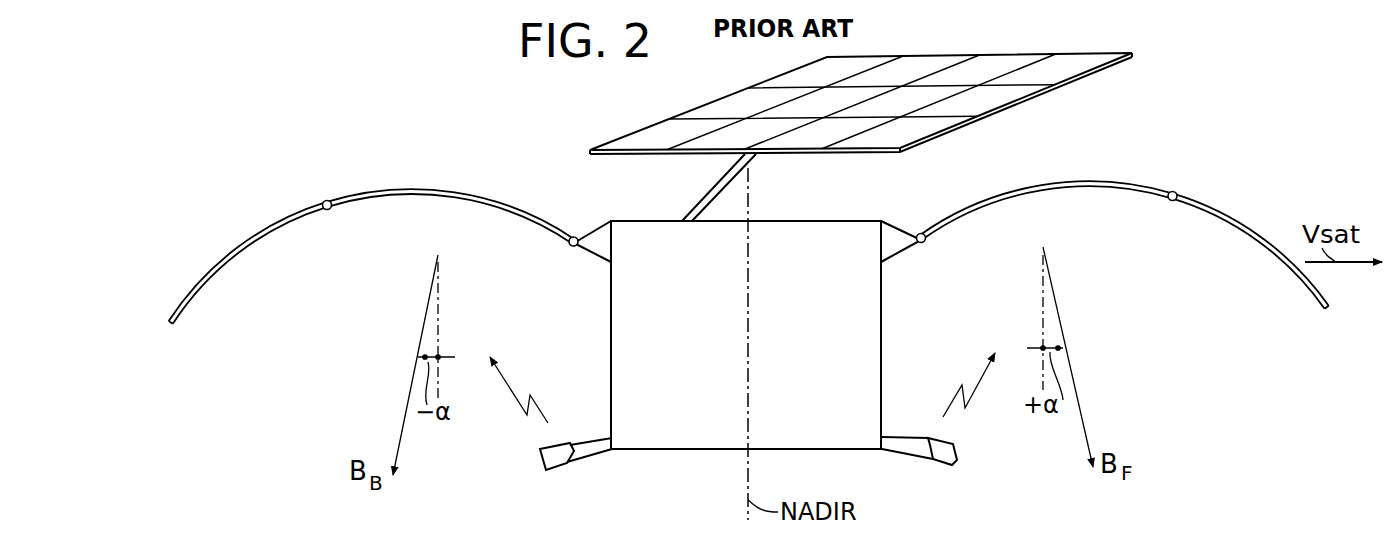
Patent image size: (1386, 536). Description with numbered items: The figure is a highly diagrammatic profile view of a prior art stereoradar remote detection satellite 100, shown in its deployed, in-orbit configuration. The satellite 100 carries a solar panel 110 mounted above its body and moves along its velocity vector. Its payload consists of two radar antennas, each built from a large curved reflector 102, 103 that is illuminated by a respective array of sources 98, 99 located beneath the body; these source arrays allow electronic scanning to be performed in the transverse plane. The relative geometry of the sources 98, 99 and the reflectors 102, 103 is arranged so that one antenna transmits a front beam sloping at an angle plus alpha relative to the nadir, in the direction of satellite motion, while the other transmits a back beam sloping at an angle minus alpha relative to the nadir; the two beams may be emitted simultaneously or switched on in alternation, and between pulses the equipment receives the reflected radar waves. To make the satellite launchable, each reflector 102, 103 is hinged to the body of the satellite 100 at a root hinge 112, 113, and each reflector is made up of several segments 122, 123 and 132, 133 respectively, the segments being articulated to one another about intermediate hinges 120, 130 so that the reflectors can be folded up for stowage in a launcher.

The array of sources 98 is at (934, 456).
The array of sources 99 is at (565, 460).
The remote detection satellite 100 is at (807, 423).
The reflector 102 is at (1123, 202).
The reflector 103 is at (373, 209).
The solar panel 110 is at (1000, 67).
The hinge 112 is at (922, 234).
The hinge 113 is at (574, 238).
The hinge 120 is at (1173, 193).
The segment 122 is at (1252, 227).
The segment 123 is at (1065, 182).
The hinge 130 is at (327, 202).
The segment 132 is at (460, 196).
The segment 133 is at (229, 256).